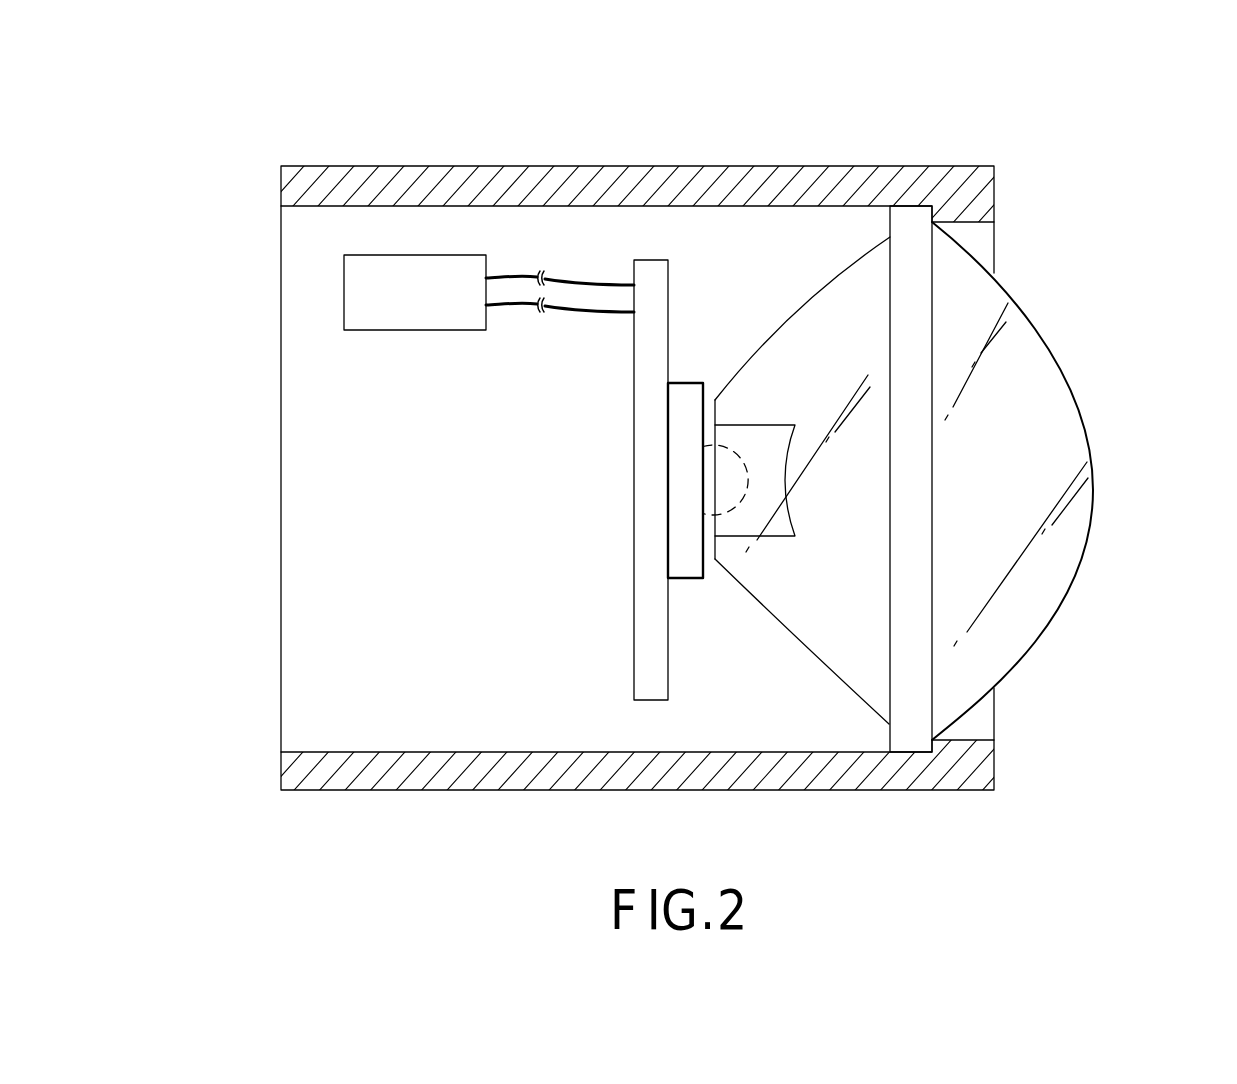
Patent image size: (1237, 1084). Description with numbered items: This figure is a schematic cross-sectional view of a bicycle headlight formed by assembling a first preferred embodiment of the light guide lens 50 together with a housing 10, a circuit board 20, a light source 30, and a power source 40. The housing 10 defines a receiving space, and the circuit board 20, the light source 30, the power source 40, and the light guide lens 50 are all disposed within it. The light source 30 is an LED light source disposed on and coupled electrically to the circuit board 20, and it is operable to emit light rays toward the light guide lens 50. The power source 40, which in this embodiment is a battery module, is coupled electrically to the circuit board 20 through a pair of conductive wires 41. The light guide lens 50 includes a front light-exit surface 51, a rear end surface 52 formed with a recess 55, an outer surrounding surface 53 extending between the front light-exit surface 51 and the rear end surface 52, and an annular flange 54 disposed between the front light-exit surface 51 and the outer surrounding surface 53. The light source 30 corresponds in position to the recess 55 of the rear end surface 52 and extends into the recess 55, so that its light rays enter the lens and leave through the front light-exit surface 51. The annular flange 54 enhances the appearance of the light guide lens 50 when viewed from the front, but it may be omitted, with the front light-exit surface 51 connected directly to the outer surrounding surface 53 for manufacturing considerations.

The housing 10 is at (387, 162).
The circuit board 20 is at (643, 592).
The light source 30 is at (685, 558).
The power source 40 is at (344, 292).
The conductive wires 41 is at (580, 283).
The light guide lens 50 is at (1047, 319).
The front light-exit surface 51 is at (1065, 369).
The rear end surface 52 is at (715, 400).
The outer surrounding surface 53 is at (800, 312).
The annular flange 54 is at (903, 222).
The recess 55 is at (742, 523).